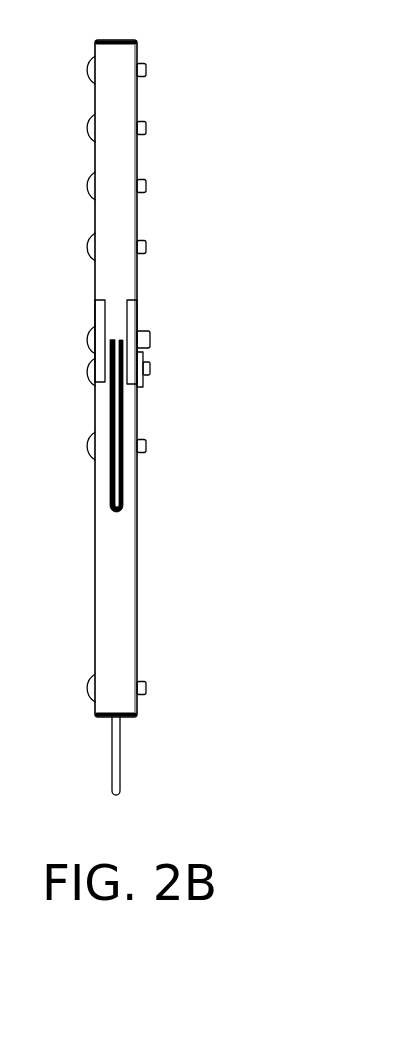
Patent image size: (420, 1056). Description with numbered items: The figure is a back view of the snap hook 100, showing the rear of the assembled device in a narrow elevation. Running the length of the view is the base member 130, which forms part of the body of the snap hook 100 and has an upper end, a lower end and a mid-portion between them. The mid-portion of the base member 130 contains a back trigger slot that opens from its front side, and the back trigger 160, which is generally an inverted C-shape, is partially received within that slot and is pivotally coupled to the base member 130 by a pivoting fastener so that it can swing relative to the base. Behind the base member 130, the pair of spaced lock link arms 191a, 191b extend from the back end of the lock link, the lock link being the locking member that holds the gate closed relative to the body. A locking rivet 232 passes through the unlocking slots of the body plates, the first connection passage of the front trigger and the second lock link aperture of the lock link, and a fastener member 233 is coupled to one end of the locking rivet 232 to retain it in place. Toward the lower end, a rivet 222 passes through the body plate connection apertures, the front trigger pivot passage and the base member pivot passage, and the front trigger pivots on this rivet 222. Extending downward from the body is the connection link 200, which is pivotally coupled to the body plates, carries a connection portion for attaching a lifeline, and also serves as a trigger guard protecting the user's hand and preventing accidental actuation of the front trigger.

The snap hook 100 is at (167, 415).
The base member 130 is at (118, 637).
The back trigger 160 is at (123, 463).
The lock link arm 191a is at (102, 318).
The lock link arm 191b is at (135, 322).
The connection link 200 is at (122, 740).
The rivet 222 is at (92, 688).
The locking rivet 232 is at (98, 372).
The fastener member 233 is at (148, 380).